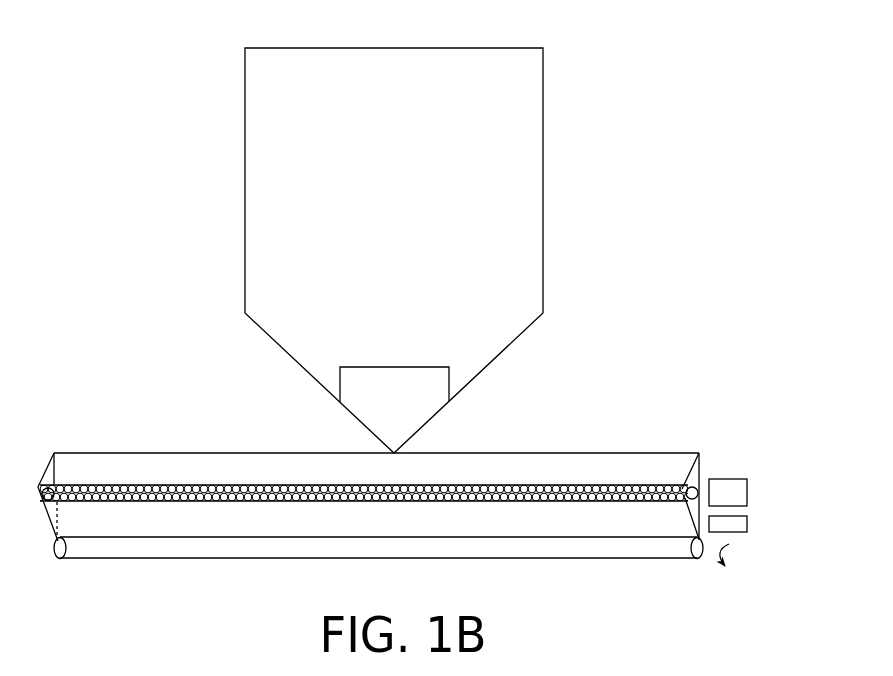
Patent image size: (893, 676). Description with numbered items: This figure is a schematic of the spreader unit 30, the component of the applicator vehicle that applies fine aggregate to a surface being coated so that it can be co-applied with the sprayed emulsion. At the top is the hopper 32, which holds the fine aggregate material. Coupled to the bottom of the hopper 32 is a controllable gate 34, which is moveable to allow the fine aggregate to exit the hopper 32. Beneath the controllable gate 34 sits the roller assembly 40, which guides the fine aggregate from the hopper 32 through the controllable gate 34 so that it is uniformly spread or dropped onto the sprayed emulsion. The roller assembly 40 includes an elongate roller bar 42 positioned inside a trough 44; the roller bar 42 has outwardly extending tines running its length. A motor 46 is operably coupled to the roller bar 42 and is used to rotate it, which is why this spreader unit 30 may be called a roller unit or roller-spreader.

The spreader unit 30 is at (450, 250).
The hopper 32 is at (411, 198).
The controllable gate 34 is at (444, 422).
The roller assembly 40 is at (437, 452).
The elongate roller bar 42 is at (578, 469).
The trough 44 is at (674, 449).
The motor 46 is at (764, 502).